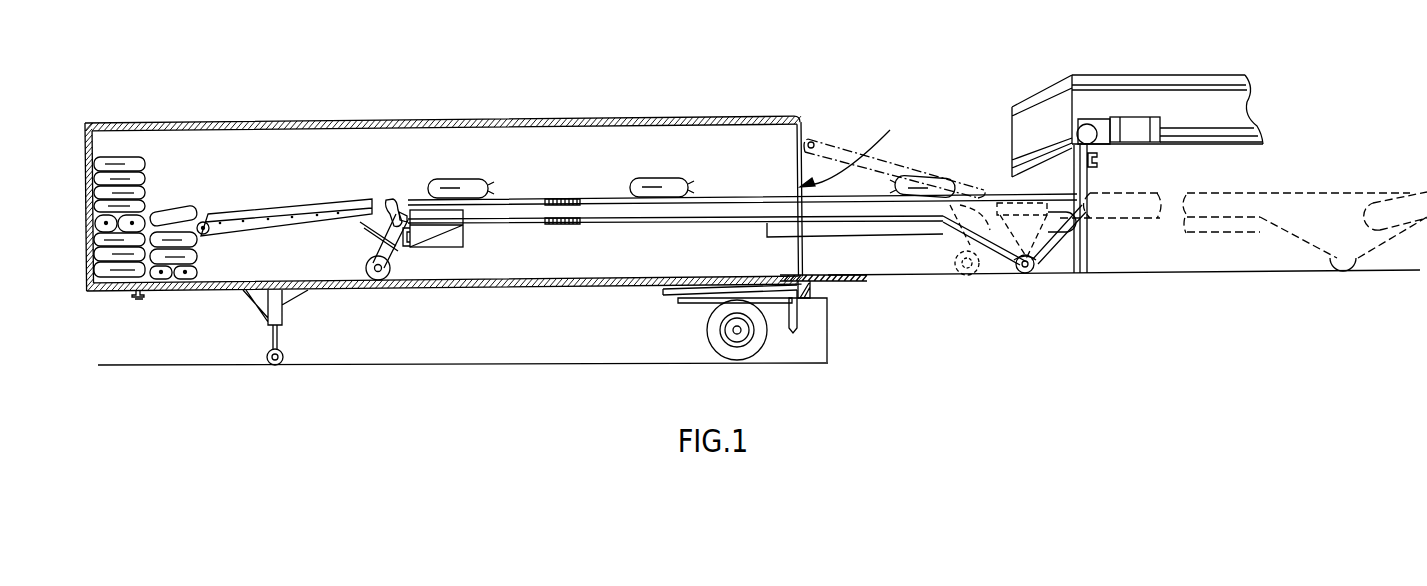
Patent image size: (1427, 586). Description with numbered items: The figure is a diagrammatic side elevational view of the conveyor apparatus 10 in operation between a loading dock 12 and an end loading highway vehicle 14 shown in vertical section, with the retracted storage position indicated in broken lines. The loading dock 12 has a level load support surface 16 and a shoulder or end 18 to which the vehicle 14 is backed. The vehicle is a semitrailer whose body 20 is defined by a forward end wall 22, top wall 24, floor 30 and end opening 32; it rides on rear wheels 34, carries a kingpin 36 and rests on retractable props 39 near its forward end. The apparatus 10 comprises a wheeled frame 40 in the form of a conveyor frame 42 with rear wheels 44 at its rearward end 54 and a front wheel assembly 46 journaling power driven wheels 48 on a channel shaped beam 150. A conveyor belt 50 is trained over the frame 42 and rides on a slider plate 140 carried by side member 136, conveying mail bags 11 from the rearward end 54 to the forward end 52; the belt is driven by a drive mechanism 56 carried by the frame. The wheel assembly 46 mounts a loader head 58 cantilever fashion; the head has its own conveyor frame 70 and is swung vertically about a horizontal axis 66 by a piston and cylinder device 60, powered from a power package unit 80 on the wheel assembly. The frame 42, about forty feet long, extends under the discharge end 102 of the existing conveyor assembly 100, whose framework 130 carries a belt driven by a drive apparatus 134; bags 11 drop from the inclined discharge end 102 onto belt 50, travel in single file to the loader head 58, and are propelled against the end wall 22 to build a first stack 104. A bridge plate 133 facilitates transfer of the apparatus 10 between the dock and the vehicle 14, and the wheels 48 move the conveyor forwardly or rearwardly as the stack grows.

The conveyor apparatus 10 is at (777, 156).
The mail bags 11 is at (488, 186).
The loading dock 12 is at (1152, 271).
The end loading highway vehicle 14 is at (443, 194).
The load support surface 16 is at (930, 270).
The shoulder or end of dock 18 is at (800, 304).
The vehicle body 20 is at (500, 122).
The forward end wall 22 is at (93, 139).
The top wall 24 is at (268, 125).
The floor 30 is at (533, 289).
The end opening 32 is at (858, 168).
The rear wheels 34 is at (706, 331).
The kingpin 36 is at (139, 304).
The retractable props 39 is at (262, 326).
The wheeled frame 40 is at (731, 186).
The conveyor frame 42 is at (668, 215).
The rear wheels of conveyor 44 is at (1030, 274).
The front wheel assembly 46 is at (428, 251).
The power driven wheels 48 is at (377, 282).
The conveyor belt 50 is at (747, 171).
The forward end 52 is at (397, 200).
The rearward end 54 is at (1065, 205).
The drive mechanism 56 is at (1077, 255).
The loader head 58 is at (297, 159).
The piston and cylinder device 60 is at (364, 252).
The horizontal axis 66 is at (401, 208).
The conveyor frame of head 70 is at (281, 212).
The power package unit 80 is at (461, 251).
The existing conveyor assembly 100 is at (1131, 97).
The discharge end 102 is at (1027, 88).
The first stack 104 is at (110, 293).
The framework 130 is at (1178, 100).
The bridge plate 133 is at (845, 275).
The drive apparatus 134 is at (1110, 110).
The side member 136 is at (704, 210).
The slider plate 140 is at (571, 226).
The frame member or beam 150 is at (393, 252).